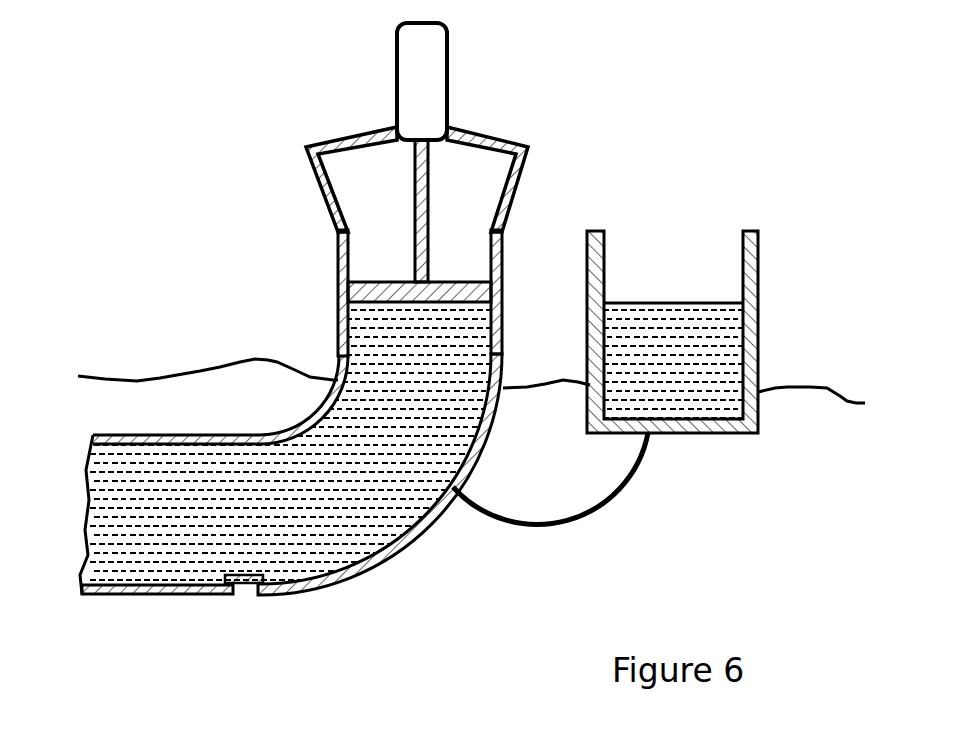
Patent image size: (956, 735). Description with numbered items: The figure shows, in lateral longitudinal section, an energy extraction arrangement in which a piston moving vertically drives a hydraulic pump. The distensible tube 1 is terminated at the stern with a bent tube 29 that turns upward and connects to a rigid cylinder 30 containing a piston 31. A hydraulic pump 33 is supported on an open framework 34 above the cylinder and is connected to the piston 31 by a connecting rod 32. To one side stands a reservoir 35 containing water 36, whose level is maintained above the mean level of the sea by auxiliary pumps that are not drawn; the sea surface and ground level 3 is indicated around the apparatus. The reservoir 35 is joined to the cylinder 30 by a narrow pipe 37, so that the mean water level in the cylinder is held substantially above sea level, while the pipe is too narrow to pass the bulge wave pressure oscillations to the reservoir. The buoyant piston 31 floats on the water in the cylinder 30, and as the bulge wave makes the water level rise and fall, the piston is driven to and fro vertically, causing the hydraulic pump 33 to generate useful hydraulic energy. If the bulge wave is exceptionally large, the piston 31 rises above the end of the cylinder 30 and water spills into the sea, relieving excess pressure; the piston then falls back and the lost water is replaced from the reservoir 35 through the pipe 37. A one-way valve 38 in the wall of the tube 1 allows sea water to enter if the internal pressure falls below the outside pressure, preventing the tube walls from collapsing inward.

The distensible tube 1 is at (155, 437).
The ground surface 3 is at (230, 362).
The bent tube 29 is at (357, 572).
The rigid cylinder 30 is at (338, 325).
The piston 31 is at (367, 290).
The connecting rod 32 is at (415, 215).
The hydraulic pump 33 is at (437, 101).
The open framework 34 is at (522, 173).
The reservoir 35 is at (603, 233).
The water 36 is at (648, 303).
The pipe 37 is at (597, 510).
The one-way valve 38 is at (238, 583).